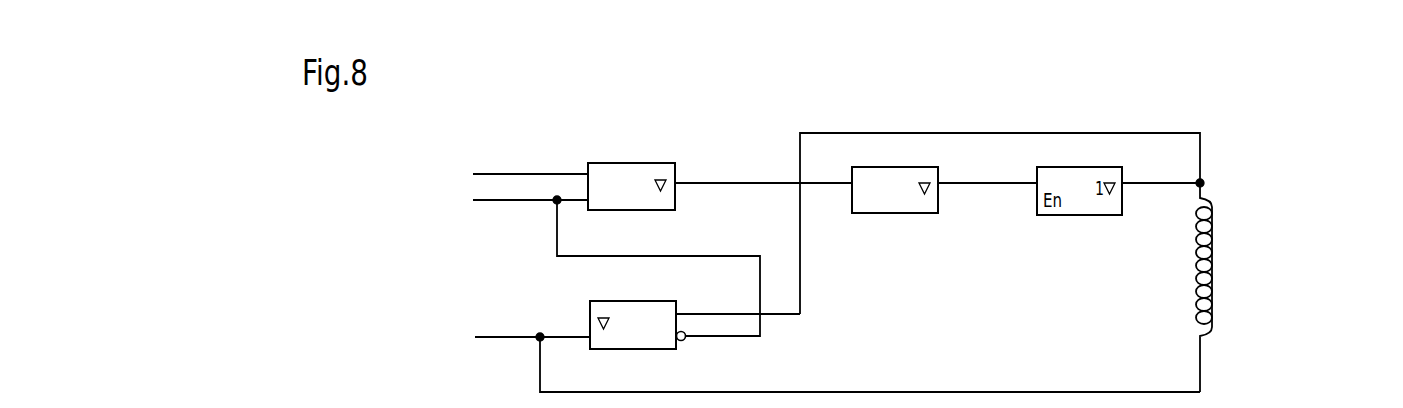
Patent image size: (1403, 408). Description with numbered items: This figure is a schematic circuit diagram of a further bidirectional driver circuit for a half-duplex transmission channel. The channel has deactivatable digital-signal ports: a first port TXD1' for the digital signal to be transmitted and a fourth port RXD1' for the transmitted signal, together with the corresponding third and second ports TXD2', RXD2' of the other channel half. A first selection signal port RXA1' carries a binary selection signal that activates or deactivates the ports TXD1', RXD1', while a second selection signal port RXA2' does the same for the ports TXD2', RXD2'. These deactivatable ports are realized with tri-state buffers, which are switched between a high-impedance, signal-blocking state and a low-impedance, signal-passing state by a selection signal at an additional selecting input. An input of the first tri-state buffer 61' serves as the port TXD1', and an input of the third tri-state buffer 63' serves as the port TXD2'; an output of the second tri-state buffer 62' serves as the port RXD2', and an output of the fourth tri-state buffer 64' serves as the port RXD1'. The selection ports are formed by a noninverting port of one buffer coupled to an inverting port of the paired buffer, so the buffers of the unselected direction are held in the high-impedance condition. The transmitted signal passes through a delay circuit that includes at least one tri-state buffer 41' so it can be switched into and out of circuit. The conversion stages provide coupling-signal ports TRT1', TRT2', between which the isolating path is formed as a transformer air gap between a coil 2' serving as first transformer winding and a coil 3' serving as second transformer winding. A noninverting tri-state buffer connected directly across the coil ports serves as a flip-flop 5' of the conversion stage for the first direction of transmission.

The first tri-state buffer 61' is at (661, 160).
The third tri-state buffer 63' is at (661, 160).
The fourth tri-state buffer 64' is at (664, 309).
The second tri-state buffer 62' is at (664, 309).
The tri-state buffer 41' is at (901, 222).
The flip-flop 5' is at (684, 291).
The coil 2' is at (1237, 287).
The coil 3' is at (1237, 287).
The coupling-signal port TRT1' is at (1237, 287).
The coupling-signal port TRT2' is at (1237, 287).
The first deactivatable digital-signal port TXD1' is at (402, 158).
The third deactivatable digital-signal port TXD2' is at (402, 158).
The first selection signal port RXA1' is at (402, 218).
The second selection signal port RXA2' is at (402, 218).
The fourth deactivatable digital-signal port RXD1' is at (403, 325).
The second deactivatable digital-signal port RXD2' is at (403, 325).